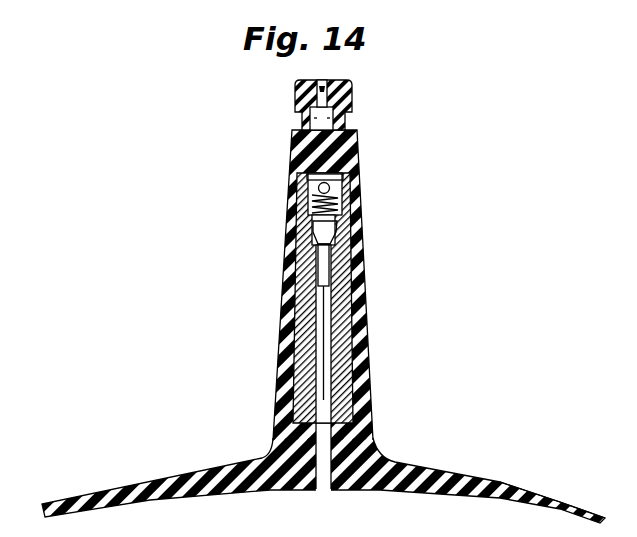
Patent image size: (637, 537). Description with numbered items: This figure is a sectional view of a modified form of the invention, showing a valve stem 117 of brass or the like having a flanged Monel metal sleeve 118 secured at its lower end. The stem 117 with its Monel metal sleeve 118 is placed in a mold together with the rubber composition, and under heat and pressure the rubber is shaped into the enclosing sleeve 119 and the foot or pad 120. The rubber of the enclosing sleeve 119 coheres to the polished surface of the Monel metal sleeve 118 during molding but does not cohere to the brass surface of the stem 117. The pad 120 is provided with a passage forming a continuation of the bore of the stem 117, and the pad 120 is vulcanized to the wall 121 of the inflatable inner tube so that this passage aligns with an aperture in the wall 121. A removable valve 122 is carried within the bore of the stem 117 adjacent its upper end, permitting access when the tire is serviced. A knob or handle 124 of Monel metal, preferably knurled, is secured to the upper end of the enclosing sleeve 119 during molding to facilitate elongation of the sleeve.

The knob or handle 124 is at (347, 97).
The enclosing sleeve 119 is at (357, 204).
The valve stem 117 is at (341, 258).
The removable valve 122 is at (318, 233).
The Monel metal sleeve 118 is at (367, 380).
The foot or pad 120 is at (233, 462).
The wall 121 is at (543, 499).